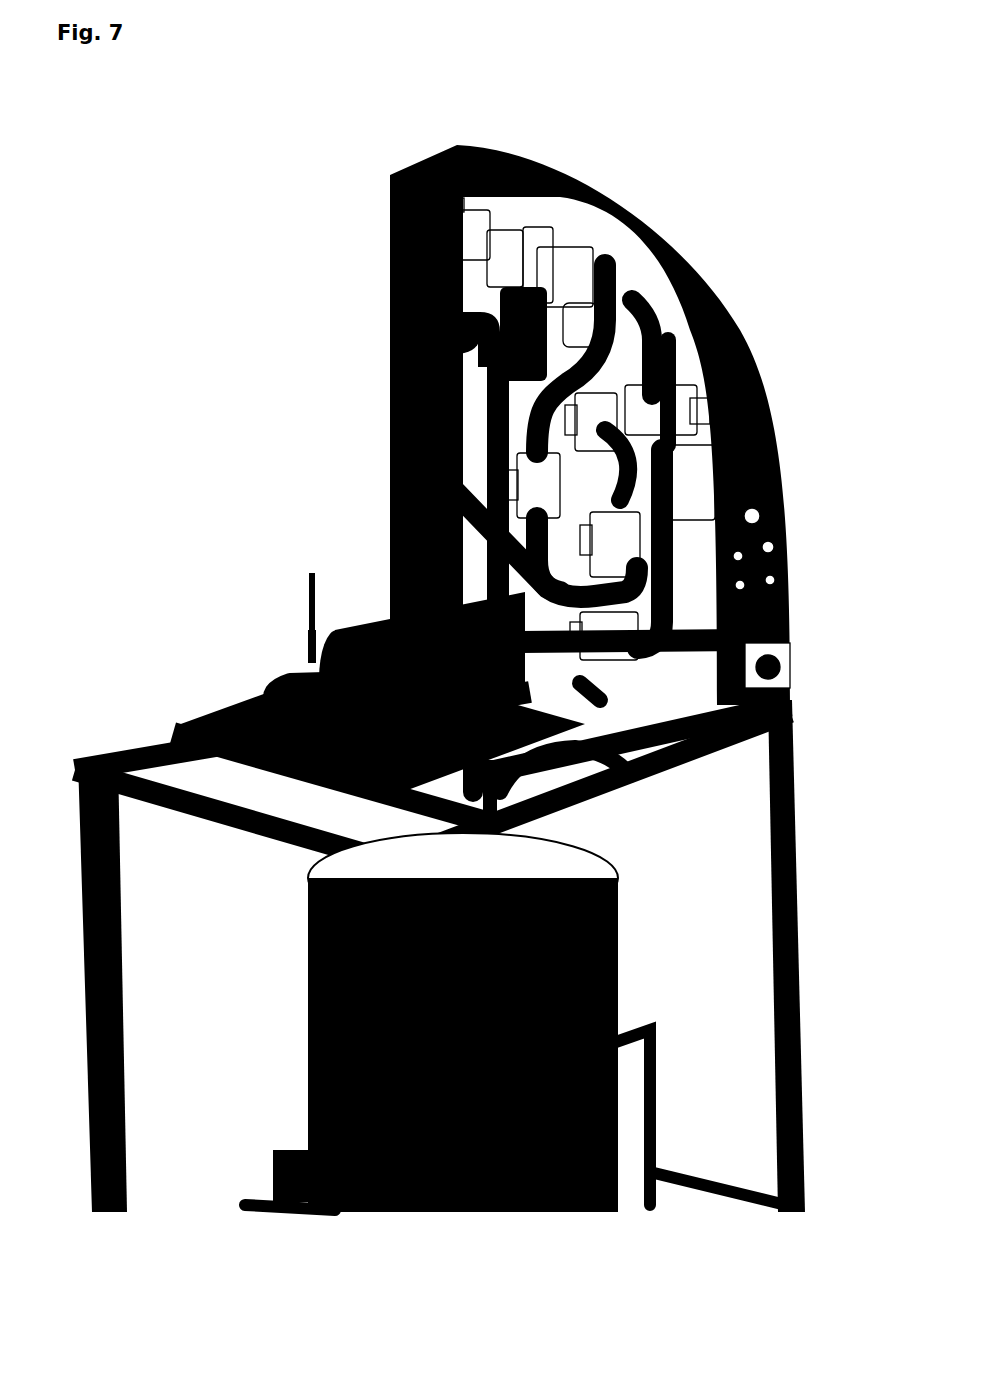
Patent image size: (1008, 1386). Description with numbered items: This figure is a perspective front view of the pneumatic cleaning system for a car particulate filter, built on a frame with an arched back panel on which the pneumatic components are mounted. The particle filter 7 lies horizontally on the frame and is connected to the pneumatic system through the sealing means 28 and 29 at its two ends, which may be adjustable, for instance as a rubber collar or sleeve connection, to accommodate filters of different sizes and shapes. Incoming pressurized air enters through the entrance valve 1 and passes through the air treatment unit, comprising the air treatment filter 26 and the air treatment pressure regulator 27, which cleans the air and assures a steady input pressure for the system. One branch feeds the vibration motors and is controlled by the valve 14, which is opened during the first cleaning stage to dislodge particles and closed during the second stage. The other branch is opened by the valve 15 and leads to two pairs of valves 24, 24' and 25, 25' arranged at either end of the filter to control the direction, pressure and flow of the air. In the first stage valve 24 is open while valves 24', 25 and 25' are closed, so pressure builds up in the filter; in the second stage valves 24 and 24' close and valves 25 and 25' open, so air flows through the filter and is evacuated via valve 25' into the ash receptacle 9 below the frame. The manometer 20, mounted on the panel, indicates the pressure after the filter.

The entrance valve 1 is at (443, 232).
The particle filter 7 is at (425, 610).
The ash receptacle 9 is at (330, 995).
The valve vibration motor branch 14 is at (525, 488).
The opening valve PF branch 15 is at (590, 405).
The manometer after filter 20 is at (752, 513).
The valve to control the orientation and pressure over the filter 24 is at (717, 596).
The valve to control the orientation and pressure over the filter 24' is at (752, 409).
The valve to control the orientation and pressure over the filter 25 is at (712, 334).
The valve to control the orientation and pressure over the filter 25' is at (645, 732).
The air treatment filter 26 is at (517, 247).
The air treatment pressure regulator 27 is at (570, 275).
The sealing means at one end of the PF 28 is at (300, 703).
The sealing means at the other end of the PF 29 is at (450, 328).